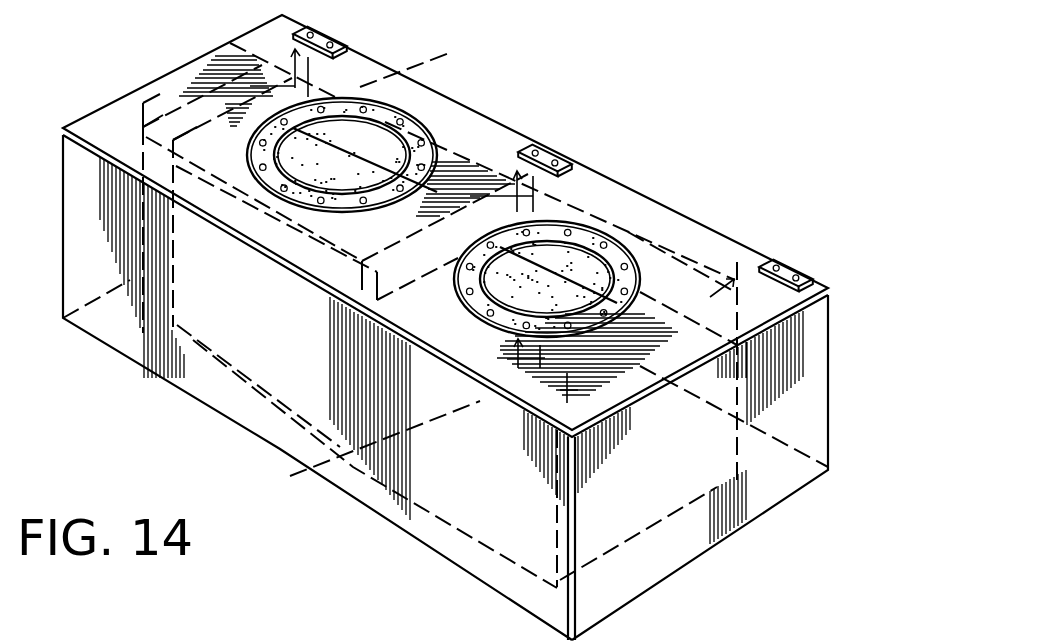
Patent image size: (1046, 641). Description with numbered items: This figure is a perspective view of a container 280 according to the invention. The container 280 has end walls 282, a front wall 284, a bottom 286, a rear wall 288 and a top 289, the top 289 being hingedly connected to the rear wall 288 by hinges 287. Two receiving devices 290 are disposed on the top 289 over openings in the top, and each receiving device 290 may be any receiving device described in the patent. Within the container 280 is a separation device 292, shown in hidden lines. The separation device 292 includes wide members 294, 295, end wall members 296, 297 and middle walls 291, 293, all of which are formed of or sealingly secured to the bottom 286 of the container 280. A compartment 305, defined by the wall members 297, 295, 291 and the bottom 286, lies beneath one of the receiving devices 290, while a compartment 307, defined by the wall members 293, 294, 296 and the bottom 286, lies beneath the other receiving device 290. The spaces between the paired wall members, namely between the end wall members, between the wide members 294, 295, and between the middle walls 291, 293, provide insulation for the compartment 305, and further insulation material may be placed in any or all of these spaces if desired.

The container 280 is at (743, 543).
The end walls 282 is at (108, 128).
The front wall 284 is at (172, 385).
The bottom 286 is at (463, 543).
The hinges 287 is at (340, 42).
The rear wall 288 is at (672, 256).
The top 289 is at (587, 182).
The receiving devices 290 is at (402, 110).
The middle wall 291 is at (290, 472).
The separation device 292 is at (363, 460).
The middle wall 293 is at (476, 408).
The wide member 294 is at (470, 143).
The wide member 295 is at (117, 388).
The end wall member 296 is at (253, 74).
The end wall member 297 is at (200, 94).
The compartment 305 is at (167, 120).
The compartment 307 is at (760, 357).